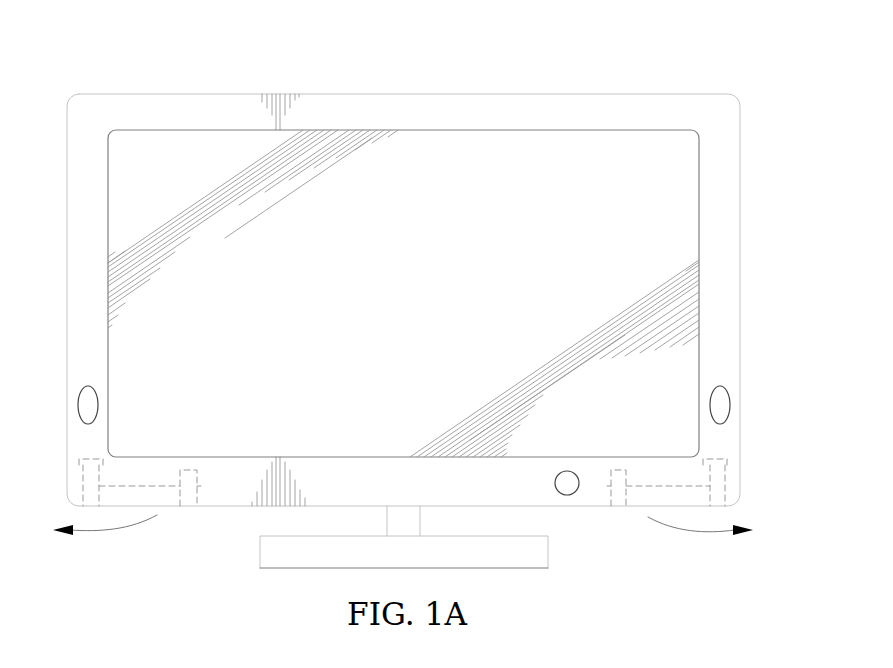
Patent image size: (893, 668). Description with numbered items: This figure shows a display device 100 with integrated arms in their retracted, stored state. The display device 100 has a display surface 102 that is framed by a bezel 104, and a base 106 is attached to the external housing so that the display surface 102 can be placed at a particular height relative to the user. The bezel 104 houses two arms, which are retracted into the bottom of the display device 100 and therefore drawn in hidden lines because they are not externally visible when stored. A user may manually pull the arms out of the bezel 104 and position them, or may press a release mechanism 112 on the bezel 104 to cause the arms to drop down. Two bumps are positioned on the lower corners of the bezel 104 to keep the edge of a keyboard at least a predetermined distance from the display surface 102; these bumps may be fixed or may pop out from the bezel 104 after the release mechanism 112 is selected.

The display device 100 is at (198, 72).
The display surface 102 is at (424, 307).
The bezel 104 is at (562, 100).
The base 106 is at (293, 568).
The release mechanism 112 is at (562, 478).